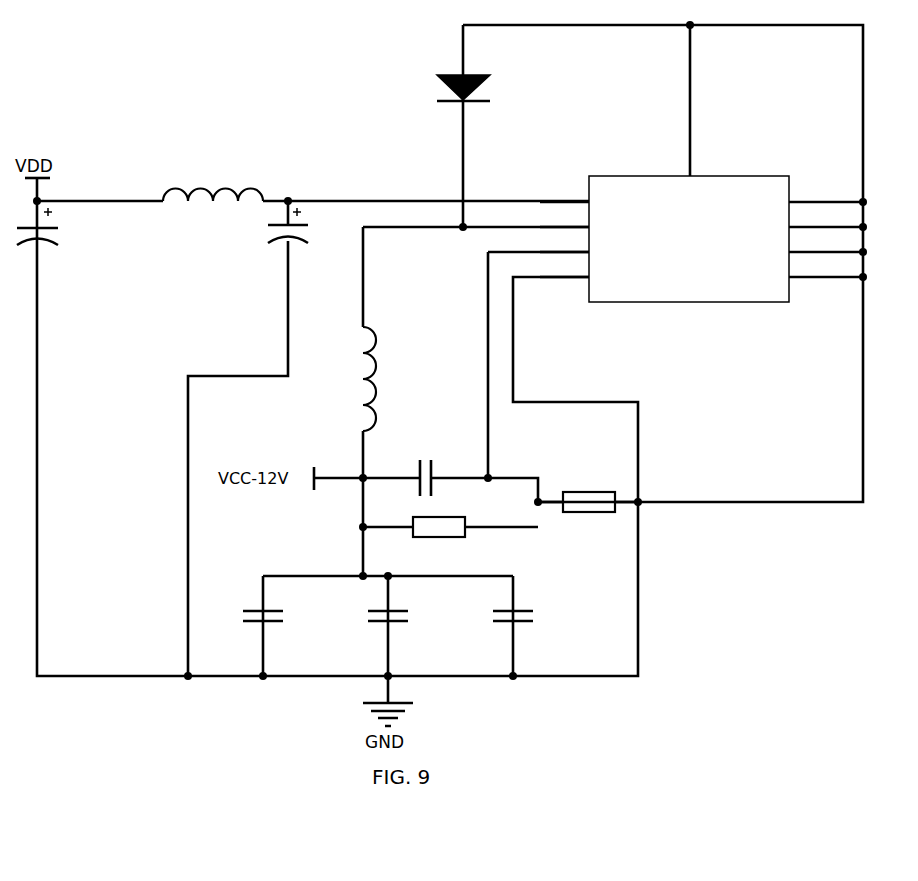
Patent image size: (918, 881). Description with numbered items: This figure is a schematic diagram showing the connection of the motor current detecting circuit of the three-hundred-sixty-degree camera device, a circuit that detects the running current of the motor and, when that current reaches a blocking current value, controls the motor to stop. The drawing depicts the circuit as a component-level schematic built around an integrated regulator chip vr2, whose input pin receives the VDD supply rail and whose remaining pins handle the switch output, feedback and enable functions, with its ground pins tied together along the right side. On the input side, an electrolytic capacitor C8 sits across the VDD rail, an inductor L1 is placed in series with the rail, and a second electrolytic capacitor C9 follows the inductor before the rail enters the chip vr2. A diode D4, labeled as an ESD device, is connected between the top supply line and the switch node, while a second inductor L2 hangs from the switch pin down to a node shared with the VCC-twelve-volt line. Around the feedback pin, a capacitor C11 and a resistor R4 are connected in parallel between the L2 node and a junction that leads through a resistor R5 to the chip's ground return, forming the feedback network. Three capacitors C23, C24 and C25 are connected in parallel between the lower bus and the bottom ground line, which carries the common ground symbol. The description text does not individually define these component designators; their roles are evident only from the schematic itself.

The electrolytic capacitor 220uF/50V C8 is at (80, 231).
The electrolytic capacitor 220uF/50V C9 is at (291, 308).
The inductor 10mH L1 is at (213, 198).
The inductor 47uH 0.5A L2 is at (411, 379).
The ESD diode D4 is at (486, 94).
The voltage regulator xl7005 vr2 is at (679, 258).
The capacitor 33nF C11 is at (446, 467).
The resistor 30k ohm R4 is at (443, 531).
The resistor 2.7k ohm R5 is at (575, 517).
The capacitor 22uF/25V C23 is at (301, 626).
The capacitor 22uF/25V C24 is at (426, 626).
The capacitor 22uF/25V C25 is at (551, 626).